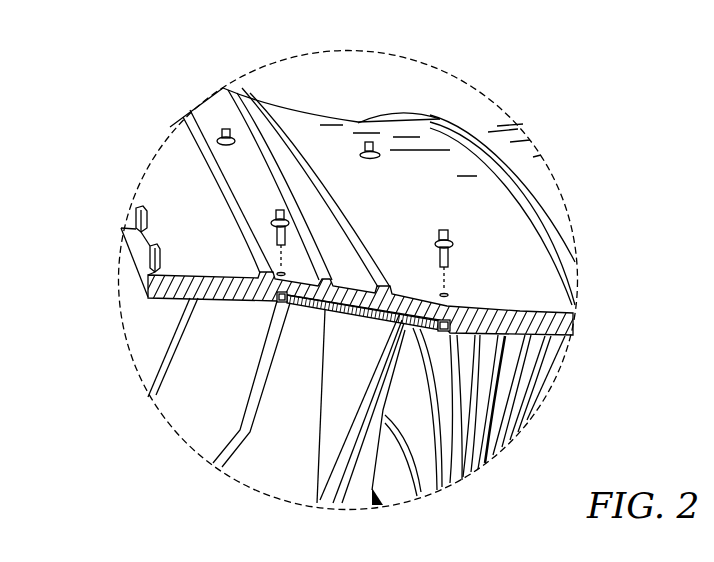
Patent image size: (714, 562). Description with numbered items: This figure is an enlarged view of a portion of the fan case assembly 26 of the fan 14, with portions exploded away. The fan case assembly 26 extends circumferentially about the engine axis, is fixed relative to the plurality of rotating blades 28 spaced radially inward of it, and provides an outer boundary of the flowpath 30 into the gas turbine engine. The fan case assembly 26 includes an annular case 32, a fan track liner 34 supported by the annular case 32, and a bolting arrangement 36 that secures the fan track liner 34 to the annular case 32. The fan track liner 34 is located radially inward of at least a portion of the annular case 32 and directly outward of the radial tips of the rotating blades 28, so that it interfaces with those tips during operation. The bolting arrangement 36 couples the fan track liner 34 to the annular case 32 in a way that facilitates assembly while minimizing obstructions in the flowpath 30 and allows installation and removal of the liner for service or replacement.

The fan 14 is at (93, 180).
The fan case assembly 26 is at (154, 99).
The rotating blades 28 is at (146, 365).
The flowpath 30 is at (163, 400).
The annular case 32 is at (427, 148).
The fan track liner 34 is at (353, 338).
The bolting arrangement 36 is at (472, 249).